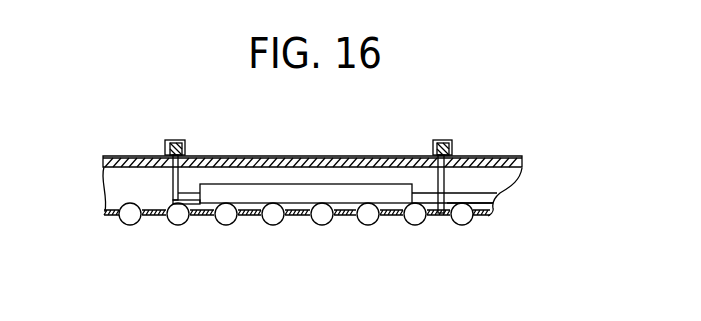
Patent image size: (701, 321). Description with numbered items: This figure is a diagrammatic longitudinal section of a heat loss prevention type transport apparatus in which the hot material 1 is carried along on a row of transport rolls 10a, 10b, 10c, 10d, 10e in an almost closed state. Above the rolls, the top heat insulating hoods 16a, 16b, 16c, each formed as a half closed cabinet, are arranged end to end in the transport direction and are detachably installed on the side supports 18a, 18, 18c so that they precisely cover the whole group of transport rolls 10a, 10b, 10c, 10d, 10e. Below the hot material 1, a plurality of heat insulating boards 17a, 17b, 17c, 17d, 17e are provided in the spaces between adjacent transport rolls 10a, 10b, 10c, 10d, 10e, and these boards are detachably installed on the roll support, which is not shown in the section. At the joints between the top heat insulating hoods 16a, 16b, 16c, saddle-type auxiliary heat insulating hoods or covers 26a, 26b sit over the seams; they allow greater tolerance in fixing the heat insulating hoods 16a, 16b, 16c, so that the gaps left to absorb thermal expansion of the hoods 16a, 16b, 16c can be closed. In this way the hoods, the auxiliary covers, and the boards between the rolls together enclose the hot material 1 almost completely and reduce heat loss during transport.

The hot material 1 is at (322, 188).
The top heat insulating hood 16a is at (135, 160).
The top heat insulating hood 16b is at (220, 162).
The top heat insulating hood 16c is at (493, 160).
The saddle-type auxiliary heat insulating hood 26a is at (177, 140).
The saddle-type auxiliary heat insulating hood 26b is at (440, 140).
The roller 18 is at (195, 213).
The side support 18a is at (106, 204).
The side support 18c is at (493, 206).
The transport roll 10a is at (223, 226).
The transport roll 10b is at (273, 226).
The transport roll 10c is at (322, 226).
The transport roll 10d is at (367, 226).
The transport roll 10e is at (415, 226).
The heat insulating board 17a is at (201, 216).
The heat insulating board 17b is at (250, 216).
The heat insulating board 17c is at (300, 216).
The heat insulating board 17d is at (347, 216).
The heat insulating board 17e is at (393, 216).